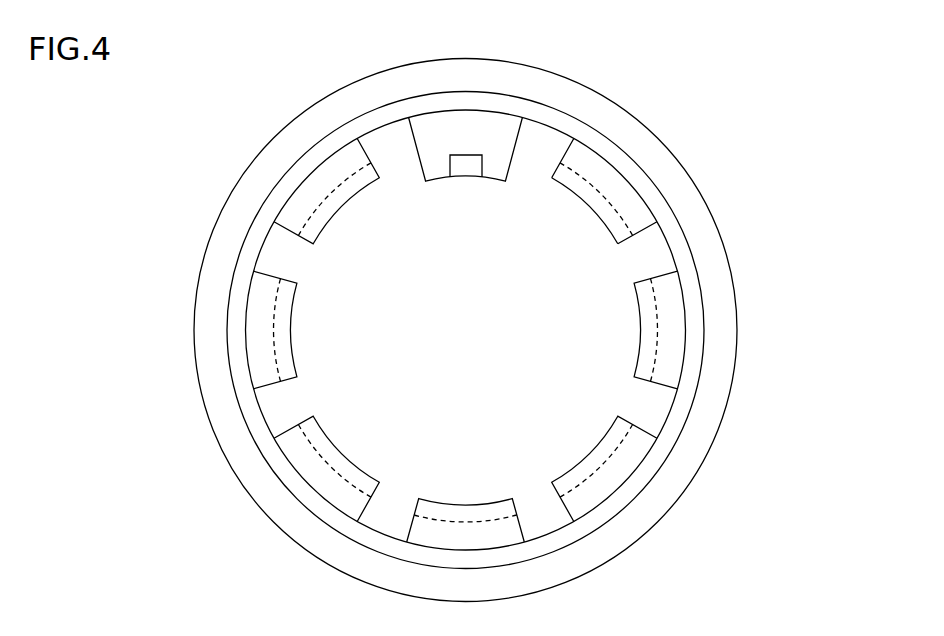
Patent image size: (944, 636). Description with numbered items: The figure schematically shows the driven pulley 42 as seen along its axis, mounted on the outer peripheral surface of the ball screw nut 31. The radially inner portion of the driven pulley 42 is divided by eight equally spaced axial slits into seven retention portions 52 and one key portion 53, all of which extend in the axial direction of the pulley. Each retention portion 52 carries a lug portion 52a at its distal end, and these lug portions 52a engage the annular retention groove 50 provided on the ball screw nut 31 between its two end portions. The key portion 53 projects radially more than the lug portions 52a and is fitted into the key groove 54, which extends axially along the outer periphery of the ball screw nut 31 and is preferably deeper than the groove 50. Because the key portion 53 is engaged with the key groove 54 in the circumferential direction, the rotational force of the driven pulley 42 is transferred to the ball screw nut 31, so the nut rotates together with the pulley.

The driven pulley 42 is at (712, 168).
The groove 50 is at (290, 327).
The ball screw nut 31 is at (290, 270).
The retention portion 52 is at (602, 181).
The lug portion 52a is at (587, 212).
The key portion 53 is at (473, 104).
The key groove 54 is at (492, 170).